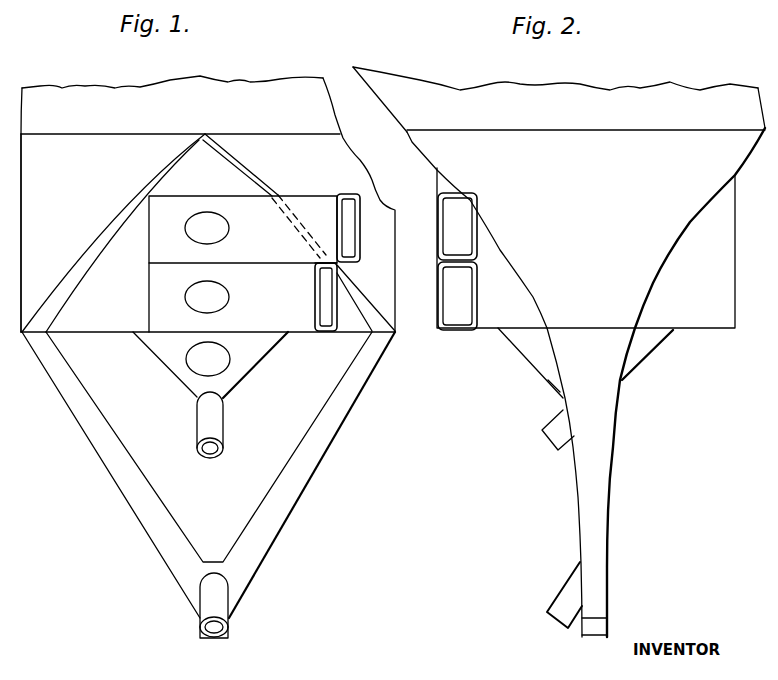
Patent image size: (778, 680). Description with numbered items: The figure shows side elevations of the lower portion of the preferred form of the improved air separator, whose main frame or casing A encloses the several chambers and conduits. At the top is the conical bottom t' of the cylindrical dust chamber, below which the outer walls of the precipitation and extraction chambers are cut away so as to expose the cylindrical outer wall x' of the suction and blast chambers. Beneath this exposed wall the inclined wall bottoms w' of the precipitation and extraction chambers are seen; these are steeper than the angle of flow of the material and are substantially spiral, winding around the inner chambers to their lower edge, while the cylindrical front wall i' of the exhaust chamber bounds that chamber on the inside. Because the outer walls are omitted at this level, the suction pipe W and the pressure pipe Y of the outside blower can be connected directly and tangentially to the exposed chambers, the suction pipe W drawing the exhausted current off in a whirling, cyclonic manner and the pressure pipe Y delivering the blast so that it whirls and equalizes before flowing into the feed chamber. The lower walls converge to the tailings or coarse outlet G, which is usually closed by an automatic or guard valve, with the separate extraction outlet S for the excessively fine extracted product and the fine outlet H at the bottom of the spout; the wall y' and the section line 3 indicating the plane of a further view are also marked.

In FIG. 1, the main frame or casing A is at (208, 195).
In FIG. 2, the main frame or casing A is at (559, 92).
In FIG. 1, the bottom of the cylindrical dust chamber t' is at (180, 121).
In FIG. 2, the bottom of the cylindrical dust chamber t' is at (579, 115).
In FIG. 1, the cylindrical outer wall x' is at (41, 233).
In FIG. 2, the cylindrical outer wall x' is at (586, 248).
In FIG. 1, the inclined wall bottom w' is at (113, 233).
In FIG. 2, the inclined wall bottom w' is at (494, 384).
In FIG. 1, the cylindrical front wall i' is at (256, 232).
In FIG. 2, the cylindrical front wall i' is at (686, 382).
In FIG. 1, the suction pipe W is at (254, 228).
In FIG. 2, the suction pipe W is at (457, 226).
In FIG. 1, the pressure pipe Y is at (243, 297).
In FIG. 2, the pressure pipe Y is at (457, 296).
In FIG. 1, the bottom plate y' is at (209, 447).
In FIG. 2, the bottom plate y' is at (615, 363).
In FIG. 1, the coarse outlet G is at (225, 438).
In FIG. 2, the coarse outlet G is at (540, 438).
In FIG. 1, the extraction outlet S is at (229, 609).
In FIG. 2, the extraction outlet S is at (562, 580).
In FIG. 1, the fine outlet H is at (232, 629).
In FIG. 2, the fine outlet H is at (607, 618).
In FIG. 1, the section line 3 is at (202, 96).